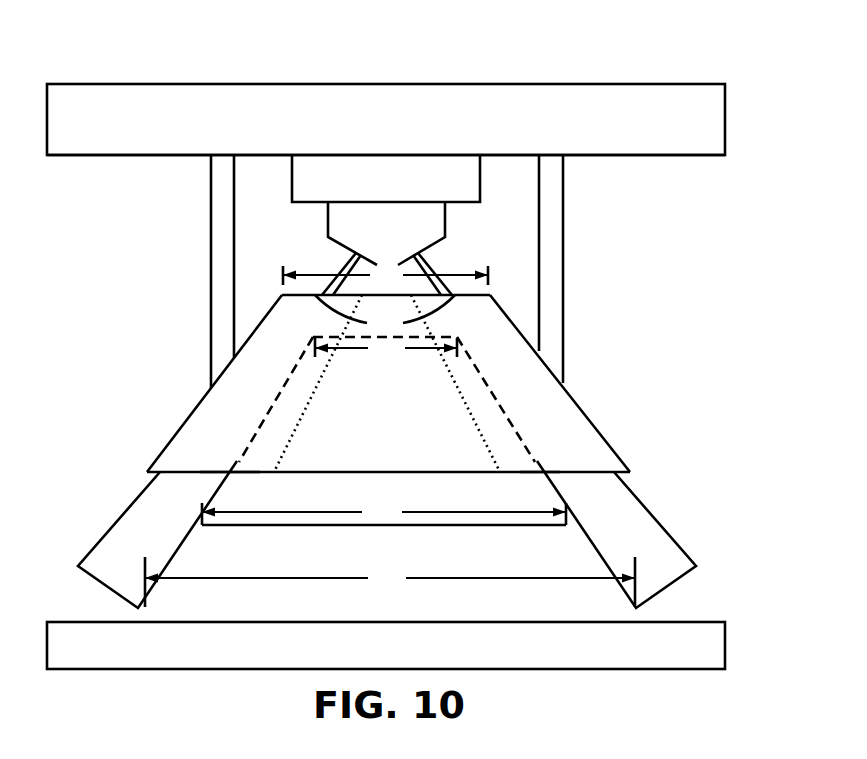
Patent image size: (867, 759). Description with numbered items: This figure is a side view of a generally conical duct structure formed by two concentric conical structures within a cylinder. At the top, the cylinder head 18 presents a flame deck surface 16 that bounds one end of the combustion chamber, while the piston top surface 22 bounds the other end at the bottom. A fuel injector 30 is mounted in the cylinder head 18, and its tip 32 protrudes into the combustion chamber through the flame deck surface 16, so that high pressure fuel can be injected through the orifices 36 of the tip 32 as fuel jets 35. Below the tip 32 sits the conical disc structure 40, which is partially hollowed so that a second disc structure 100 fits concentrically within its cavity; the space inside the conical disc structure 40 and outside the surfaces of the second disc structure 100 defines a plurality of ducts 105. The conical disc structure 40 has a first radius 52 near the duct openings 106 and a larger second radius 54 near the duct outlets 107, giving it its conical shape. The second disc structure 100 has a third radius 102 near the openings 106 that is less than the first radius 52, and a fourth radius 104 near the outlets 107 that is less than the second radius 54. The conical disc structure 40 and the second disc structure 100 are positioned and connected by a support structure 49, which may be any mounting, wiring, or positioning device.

The cylinder head 18 is at (507, 105).
The flame deck surface 16 is at (605, 156).
The fuel injector 30 is at (408, 165).
The tip 32 is at (373, 240).
The orifices 36 is at (358, 253).
The support structure 49 is at (211, 233).
The conical disc structure 40 is at (203, 398).
The ducts 105 is at (298, 333).
The first radius 52 is at (385, 275).
The openings 106 is at (385, 316).
The third radius 102 is at (387, 383).
The second disc structure 100 is at (490, 528).
The outlets 107 is at (208, 473).
The fourth radius 104 is at (384, 513).
The fuel jets 35 is at (133, 560).
The second radius 54 is at (390, 582).
The piston top surface 22 is at (387, 628).